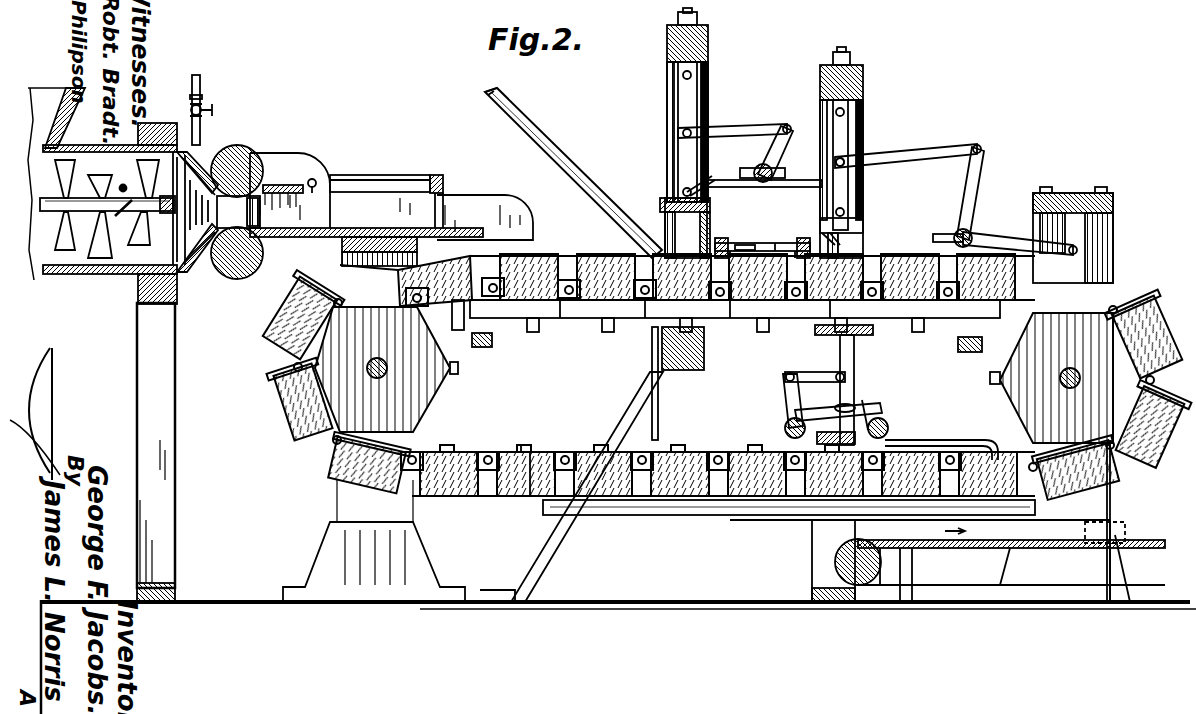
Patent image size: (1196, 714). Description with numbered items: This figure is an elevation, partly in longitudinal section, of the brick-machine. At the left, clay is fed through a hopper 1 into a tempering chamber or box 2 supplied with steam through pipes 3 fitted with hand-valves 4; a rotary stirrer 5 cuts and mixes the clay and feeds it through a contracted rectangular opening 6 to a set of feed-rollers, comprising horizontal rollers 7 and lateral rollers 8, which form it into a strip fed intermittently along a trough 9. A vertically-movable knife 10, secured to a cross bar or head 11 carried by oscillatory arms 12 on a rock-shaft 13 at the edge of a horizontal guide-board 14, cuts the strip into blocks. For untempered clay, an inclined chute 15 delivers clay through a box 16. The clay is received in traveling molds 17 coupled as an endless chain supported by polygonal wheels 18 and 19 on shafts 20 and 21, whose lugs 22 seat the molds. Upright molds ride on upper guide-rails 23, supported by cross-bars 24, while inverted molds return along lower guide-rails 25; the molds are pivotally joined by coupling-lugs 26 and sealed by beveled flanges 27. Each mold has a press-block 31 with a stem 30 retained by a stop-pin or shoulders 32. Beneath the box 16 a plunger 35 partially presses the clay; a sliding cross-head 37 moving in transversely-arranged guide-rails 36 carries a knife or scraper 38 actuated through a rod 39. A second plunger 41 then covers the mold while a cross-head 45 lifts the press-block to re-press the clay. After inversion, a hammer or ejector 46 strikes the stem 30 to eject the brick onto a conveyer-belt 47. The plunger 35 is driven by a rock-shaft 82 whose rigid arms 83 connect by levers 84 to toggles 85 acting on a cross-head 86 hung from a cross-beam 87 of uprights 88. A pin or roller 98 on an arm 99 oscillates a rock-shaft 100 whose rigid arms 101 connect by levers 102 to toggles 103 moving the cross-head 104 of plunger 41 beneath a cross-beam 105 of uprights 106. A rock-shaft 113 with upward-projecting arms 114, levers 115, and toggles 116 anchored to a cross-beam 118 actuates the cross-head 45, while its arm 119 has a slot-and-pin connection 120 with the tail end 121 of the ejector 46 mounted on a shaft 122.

The hopper 1 is at (56, 184).
The tempering chamber or box 2 is at (105, 149).
The steam pipes 3 is at (200, 78).
The hand-valves 4 is at (190, 108).
The rotary stirrer 5 is at (66, 176).
The contracted rectangular opening 6 is at (197, 212).
The horizontal feed-rollers 7 is at (232, 150).
The lateral feed-rollers 8 is at (238, 212).
The trough 9 is at (366, 209).
The knife 10 is at (448, 207).
The cross bar or head 11 is at (436, 176).
The oscillatory arms 12 is at (372, 178).
The rock-shaft 13 is at (314, 180).
The horizontal guide-board 14 is at (282, 185).
The inclined chute 15 is at (580, 160).
The open-bottomed box 16 is at (710, 222).
The traveling molds 17 is at (725, 377).
The hexagonal or polygonal wheel 18 is at (1056, 378).
The hexagonal or polygonal wheel 19 is at (382, 369).
The shaft 20 is at (1070, 388).
The shaft 21 is at (380, 378).
The lugs 22 is at (458, 372).
The upper guide-rails 23 is at (726, 315).
The cross-bars 24 is at (958, 346).
The lower guide-rails 25 is at (789, 518).
The coupling-lugs 26 is at (652, 335).
The flanges 27 is at (560, 262).
The press-block stem 30 is at (532, 450).
The press-block 31 is at (505, 517).
The stop-pin or shoulders 32 is at (538, 461).
The plunger 35 is at (685, 228).
The transversely-arranged guide-rails 36 is at (762, 237).
The sliding cross-head 37 is at (776, 243).
The knife or scraper 38 is at (762, 240).
The rod 39 is at (750, 245).
The plunger 41 is at (838, 245).
The cross-head 45 is at (855, 338).
The hammer or ejector 46 is at (960, 440).
The conveyer-belt 47 is at (935, 580).
The rock-shaft 82 is at (774, 173).
The rigid arms 83 is at (775, 153).
The levers 84 is at (734, 132).
The toggles 85 is at (684, 108).
The cross-head 86 is at (754, 176).
The cross-beam 87 is at (708, 40).
The uprights 88 is at (708, 90).
The pin or roller 98 is at (1073, 252).
The arm 99 is at (1020, 243).
The rock-shaft 100 is at (975, 232).
The rigid arms 101 is at (975, 180).
The levers 102 is at (908, 156).
The toggles 103 is at (848, 132).
The cross-head 104 is at (841, 231).
The cross-beam 105 is at (859, 73).
The uprights 106 is at (820, 128).
The rock-shaft 113 is at (785, 430).
The upward-projecting arms 114 is at (785, 404).
The levers 115 is at (800, 372).
The toggles 116 is at (855, 355).
The cross-beam 118 is at (836, 430).
The arm 119 is at (795, 418).
The slot-and-pin connection 120 is at (850, 405).
The tail end 121 is at (885, 418).
The shaft 122 is at (888, 426).